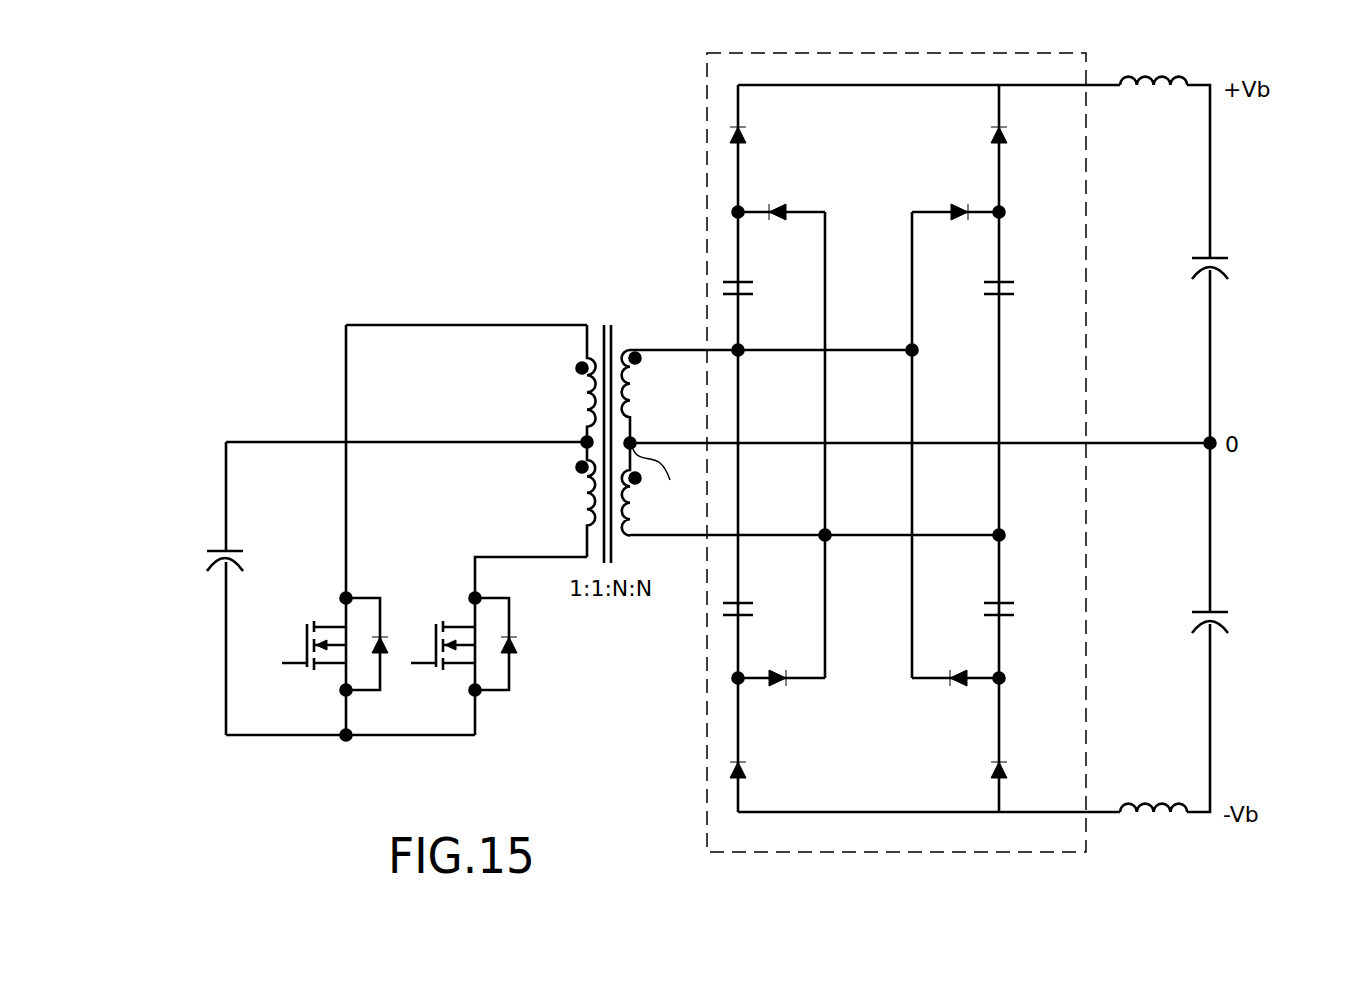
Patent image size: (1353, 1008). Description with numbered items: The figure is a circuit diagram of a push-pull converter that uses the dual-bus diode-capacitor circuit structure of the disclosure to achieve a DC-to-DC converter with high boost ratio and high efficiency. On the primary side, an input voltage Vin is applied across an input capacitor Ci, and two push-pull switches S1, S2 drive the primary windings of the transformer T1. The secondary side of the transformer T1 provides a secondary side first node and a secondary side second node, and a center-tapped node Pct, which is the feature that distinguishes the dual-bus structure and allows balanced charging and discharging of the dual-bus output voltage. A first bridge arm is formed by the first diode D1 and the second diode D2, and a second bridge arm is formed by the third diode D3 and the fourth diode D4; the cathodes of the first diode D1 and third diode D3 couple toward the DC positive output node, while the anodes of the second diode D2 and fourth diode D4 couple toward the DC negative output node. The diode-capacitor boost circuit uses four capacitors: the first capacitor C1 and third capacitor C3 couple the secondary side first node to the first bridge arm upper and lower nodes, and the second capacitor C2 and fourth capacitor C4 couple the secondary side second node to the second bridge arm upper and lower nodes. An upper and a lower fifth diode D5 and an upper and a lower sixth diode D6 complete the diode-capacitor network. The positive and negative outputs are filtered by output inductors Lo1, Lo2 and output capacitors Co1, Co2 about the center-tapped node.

The input capacitor Ci is at (233, 588).
The input voltage Vin is at (191, 525).
The first switch S1 is at (331, 644).
The second switch S2 is at (460, 644).
The transformer T1 is at (609, 427).
The center-tapped node Pct is at (658, 479).
The first diode D1 is at (1016, 132).
The second diode D2 is at (1019, 763).
The third diode D3 is at (756, 132).
The fourth diode D4 is at (756, 763).
The fifth diode D5 is at (955, 452).
The sixth diode D6 is at (781, 452).
The first capacitor C1 is at (1013, 273).
The second capacitor C2 is at (752, 273).
The third capacitor C3 is at (1012, 592).
The fourth capacitor C4 is at (754, 595).
The first output inductor Lo1 is at (1153, 68).
The second output inductor Lo2 is at (1153, 794).
The first output capacitor Co1 is at (1225, 253).
The second output capacitor Co2 is at (1225, 607).